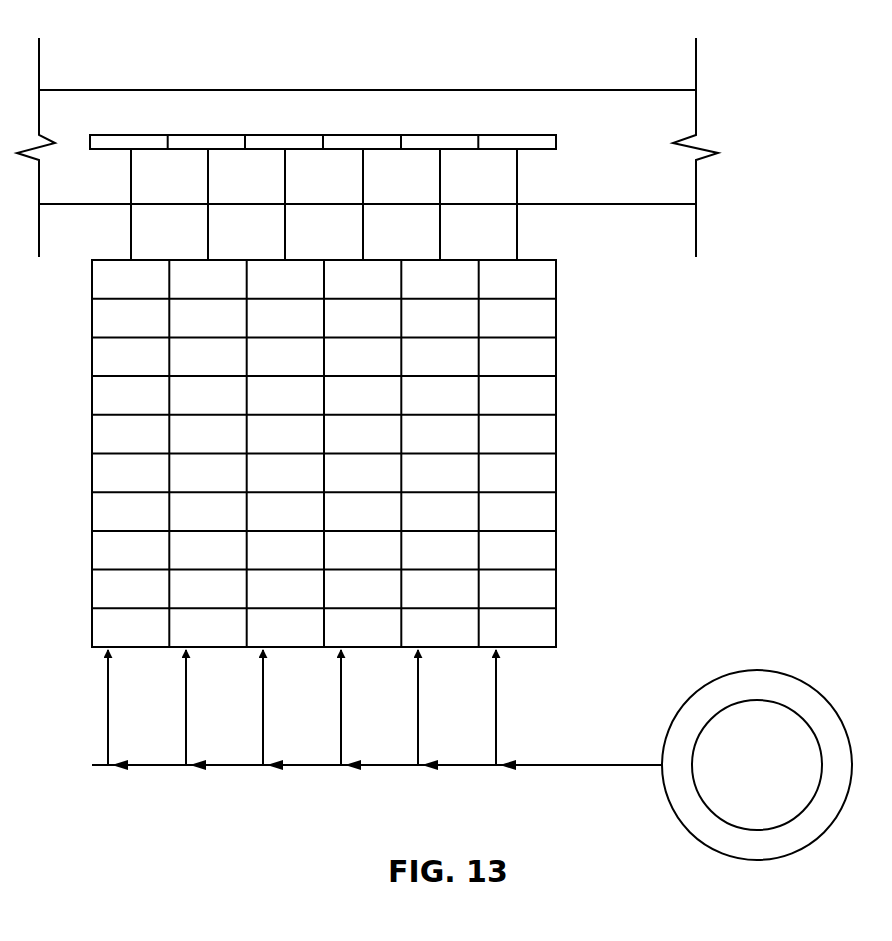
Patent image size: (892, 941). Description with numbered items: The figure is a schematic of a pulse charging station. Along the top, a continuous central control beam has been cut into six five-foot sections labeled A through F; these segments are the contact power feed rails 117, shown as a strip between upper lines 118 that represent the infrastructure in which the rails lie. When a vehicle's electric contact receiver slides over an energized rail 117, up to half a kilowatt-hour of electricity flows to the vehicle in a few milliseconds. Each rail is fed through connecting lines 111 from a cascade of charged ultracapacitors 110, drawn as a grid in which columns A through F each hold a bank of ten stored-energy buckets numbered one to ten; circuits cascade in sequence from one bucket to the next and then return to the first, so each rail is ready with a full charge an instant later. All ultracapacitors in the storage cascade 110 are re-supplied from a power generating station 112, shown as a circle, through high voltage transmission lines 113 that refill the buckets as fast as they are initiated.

The cascade of charged ultracapacitors 110 is at (560, 440).
The column lines 111 is at (524, 232).
The power generating station 112 is at (758, 668).
The high voltage transmission lines 113 is at (592, 762).
The contact power feed rails 117 is at (545, 133).
The upper bus line 118 is at (478, 88).